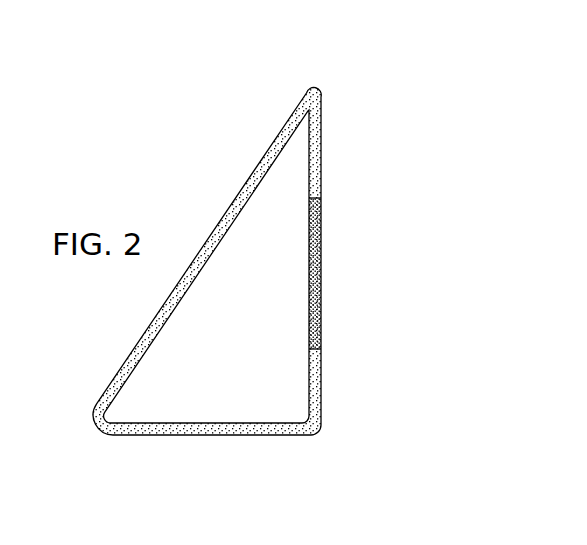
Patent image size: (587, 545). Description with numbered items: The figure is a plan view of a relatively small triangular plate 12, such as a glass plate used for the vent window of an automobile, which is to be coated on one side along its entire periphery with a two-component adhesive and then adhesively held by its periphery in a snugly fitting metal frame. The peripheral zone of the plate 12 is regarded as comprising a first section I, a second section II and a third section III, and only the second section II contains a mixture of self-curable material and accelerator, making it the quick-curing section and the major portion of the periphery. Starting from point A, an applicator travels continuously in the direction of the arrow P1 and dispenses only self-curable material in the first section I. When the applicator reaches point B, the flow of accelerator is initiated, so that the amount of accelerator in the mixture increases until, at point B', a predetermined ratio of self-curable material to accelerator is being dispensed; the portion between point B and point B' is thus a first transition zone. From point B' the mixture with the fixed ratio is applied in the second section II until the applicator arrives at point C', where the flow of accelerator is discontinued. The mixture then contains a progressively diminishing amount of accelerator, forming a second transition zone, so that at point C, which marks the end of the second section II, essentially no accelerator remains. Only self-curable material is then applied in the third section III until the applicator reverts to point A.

The plate 12 is at (290, 185).
The first section I is at (318, 240).
The second section II is at (232, 203).
The third section III is at (318, 317).
The point A is at (322, 274).
The point B is at (354, 200).
The point C is at (356, 351).
The point B' is at (354, 86).
The point C' is at (347, 446).
The arrow P1 is at (293, 237).